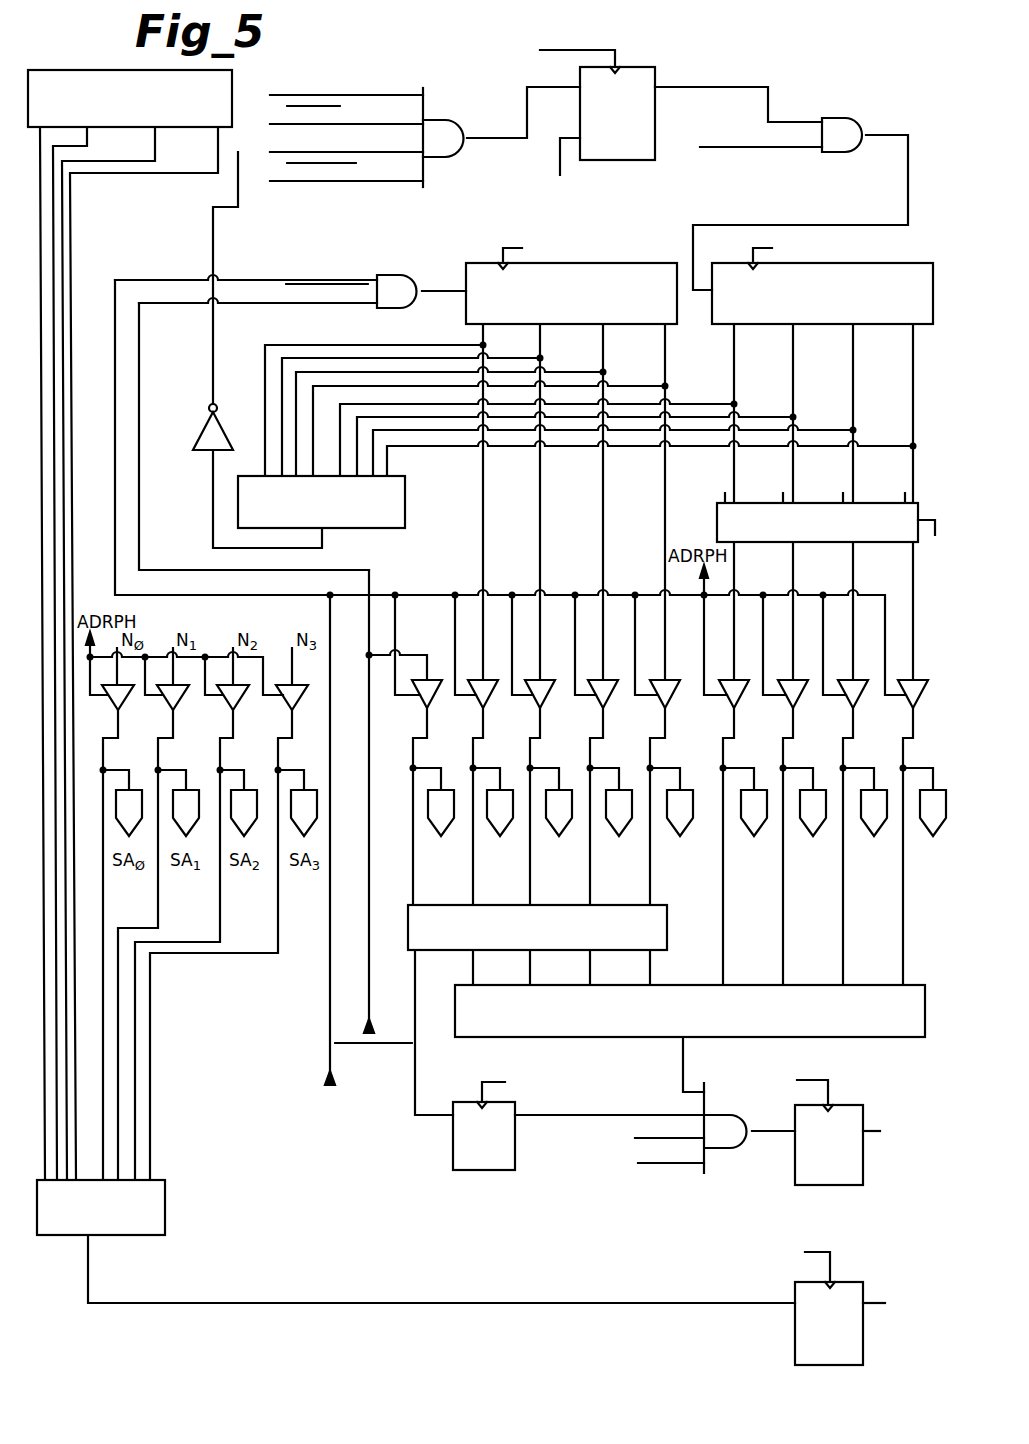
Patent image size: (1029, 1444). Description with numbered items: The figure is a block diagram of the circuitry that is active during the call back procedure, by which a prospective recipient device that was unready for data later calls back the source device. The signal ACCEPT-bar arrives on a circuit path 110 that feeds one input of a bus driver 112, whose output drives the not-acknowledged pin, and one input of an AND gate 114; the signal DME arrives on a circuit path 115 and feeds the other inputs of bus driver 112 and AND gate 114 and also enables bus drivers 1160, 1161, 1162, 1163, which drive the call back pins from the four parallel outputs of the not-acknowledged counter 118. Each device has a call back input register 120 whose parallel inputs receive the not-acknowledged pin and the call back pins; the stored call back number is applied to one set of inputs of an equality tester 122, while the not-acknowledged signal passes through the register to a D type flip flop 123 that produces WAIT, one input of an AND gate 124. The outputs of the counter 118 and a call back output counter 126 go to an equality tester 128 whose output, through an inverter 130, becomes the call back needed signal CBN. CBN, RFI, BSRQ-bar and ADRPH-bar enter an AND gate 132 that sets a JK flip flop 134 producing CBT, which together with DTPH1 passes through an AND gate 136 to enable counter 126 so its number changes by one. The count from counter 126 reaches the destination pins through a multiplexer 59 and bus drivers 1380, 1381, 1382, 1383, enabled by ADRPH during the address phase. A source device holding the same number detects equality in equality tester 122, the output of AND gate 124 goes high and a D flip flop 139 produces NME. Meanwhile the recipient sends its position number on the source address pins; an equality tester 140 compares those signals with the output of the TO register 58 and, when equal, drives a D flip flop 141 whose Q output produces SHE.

The TO register 58 is at (102, 68).
The multiplexer 59 is at (864, 544).
The circuit path 110 is at (386, 1010).
The bus driver 112 is at (418, 705).
The AND gate 114 is at (395, 275).
The circuit path 115 is at (328, 1020).
The bus driver 1160 is at (478, 702).
The bus driver 1161 is at (536, 702).
The bus driver 1162 is at (598, 702).
The bus driver 1163 is at (660, 702).
The NACK counter 118 is at (628, 262).
The call back input register 120 is at (667, 918).
The equality tester 122 is at (555, 1037).
The D type flip flop 123 is at (467, 1170).
The AND gate 124 is at (740, 1150).
The call back output counter 126 is at (860, 262).
The equality tester 128 is at (398, 528).
The inverter 130 is at (206, 436).
The AND gate 132 is at (450, 158).
The JK flip flop 134 is at (650, 160).
The AND gate 136 is at (838, 152).
The bus driver 1380 is at (728, 702).
The bus driver 1381 is at (788, 702).
The bus driver 1382 is at (848, 702).
The bus driver 1383 is at (908, 702).
The D flip flop 139 is at (843, 1185).
The equality tester 140 is at (165, 1213).
The D flip flop 141 is at (795, 1332).